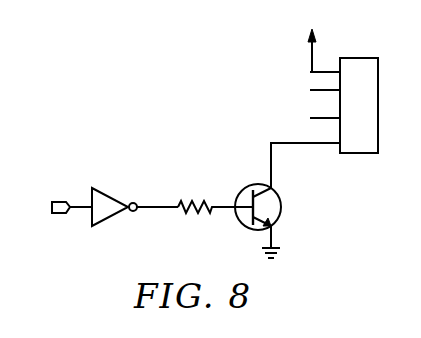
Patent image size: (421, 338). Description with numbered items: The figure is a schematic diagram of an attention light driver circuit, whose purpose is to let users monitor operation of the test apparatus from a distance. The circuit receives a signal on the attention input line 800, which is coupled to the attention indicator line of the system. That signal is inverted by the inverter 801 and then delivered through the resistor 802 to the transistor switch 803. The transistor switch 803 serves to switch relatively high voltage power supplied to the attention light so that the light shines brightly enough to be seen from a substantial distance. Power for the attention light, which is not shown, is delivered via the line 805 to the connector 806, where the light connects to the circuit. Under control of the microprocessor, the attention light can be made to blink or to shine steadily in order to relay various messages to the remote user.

The attention input line 800 is at (76, 203).
The inverter 801 is at (111, 195).
The resistor 802 is at (196, 216).
The transistor switch 803 is at (243, 184).
The line 805 is at (272, 143).
The connector 806 is at (365, 59).